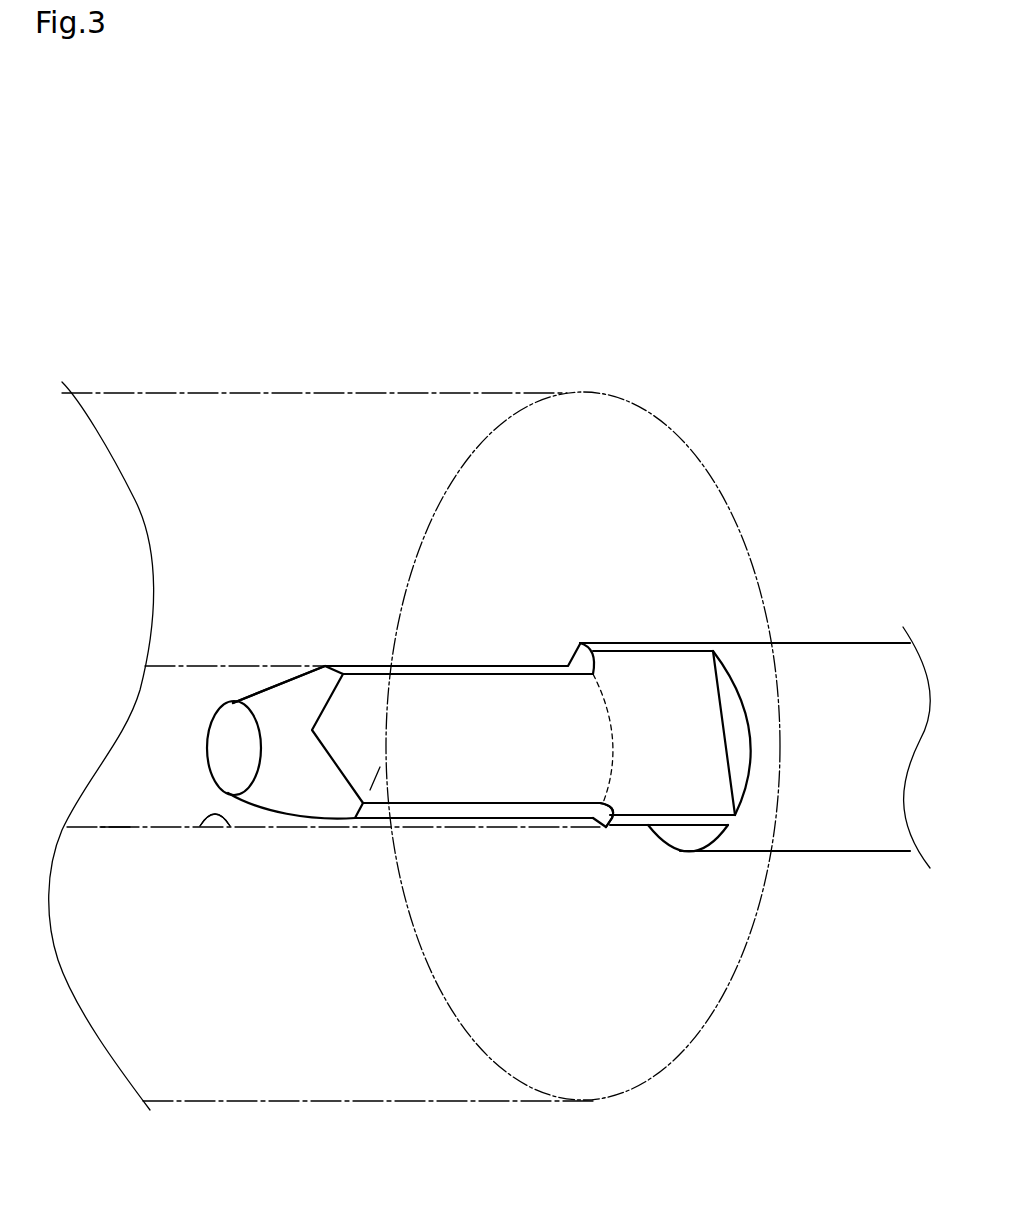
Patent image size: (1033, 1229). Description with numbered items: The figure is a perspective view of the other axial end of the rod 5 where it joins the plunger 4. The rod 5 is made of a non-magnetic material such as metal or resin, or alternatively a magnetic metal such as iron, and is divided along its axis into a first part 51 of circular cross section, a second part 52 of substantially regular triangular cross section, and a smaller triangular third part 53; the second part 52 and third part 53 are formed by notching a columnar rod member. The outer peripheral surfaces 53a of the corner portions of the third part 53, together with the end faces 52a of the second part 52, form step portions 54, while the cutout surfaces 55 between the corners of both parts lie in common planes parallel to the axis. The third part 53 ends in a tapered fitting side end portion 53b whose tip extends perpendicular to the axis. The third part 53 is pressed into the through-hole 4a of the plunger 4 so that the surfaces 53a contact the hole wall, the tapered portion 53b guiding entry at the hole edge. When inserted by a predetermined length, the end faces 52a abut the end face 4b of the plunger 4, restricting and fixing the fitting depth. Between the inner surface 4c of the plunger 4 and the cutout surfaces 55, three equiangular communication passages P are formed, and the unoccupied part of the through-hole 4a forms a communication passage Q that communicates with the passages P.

The plunger 4 is at (258, 392).
The through-hole 4a is at (200, 826).
The inner surface 4c is at (215, 820).
The end face 4b is at (720, 883).
The rod 5 is at (658, 565).
The first part 51 is at (825, 637).
The second part 52 is at (627, 643).
The end faces 52a is at (601, 828).
The third part 53 is at (465, 658).
The outer peripheral surfaces 53a is at (512, 810).
The fitting side end portion 53b is at (273, 698).
The step portions 54 is at (618, 942).
The cutout surfaces 55 is at (520, 715).
The communication passages P is at (380, 767).
The communication passage Q is at (120, 795).